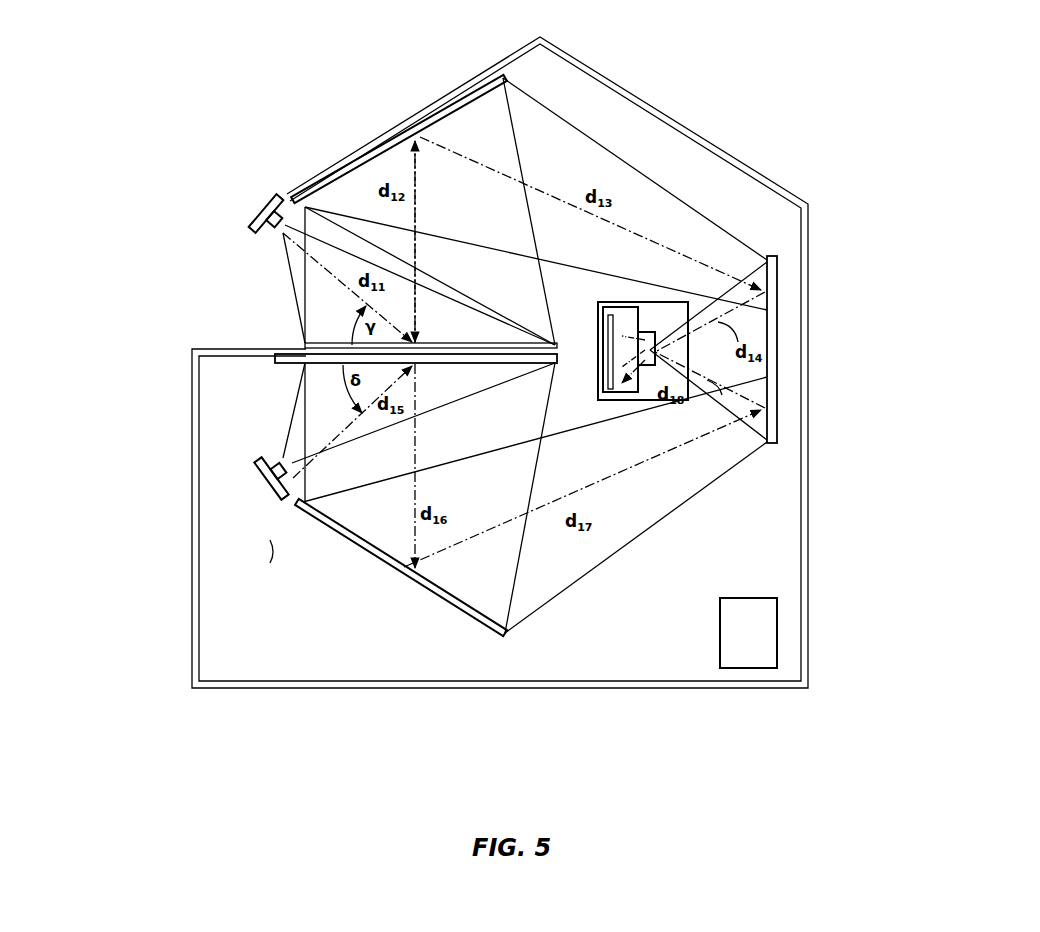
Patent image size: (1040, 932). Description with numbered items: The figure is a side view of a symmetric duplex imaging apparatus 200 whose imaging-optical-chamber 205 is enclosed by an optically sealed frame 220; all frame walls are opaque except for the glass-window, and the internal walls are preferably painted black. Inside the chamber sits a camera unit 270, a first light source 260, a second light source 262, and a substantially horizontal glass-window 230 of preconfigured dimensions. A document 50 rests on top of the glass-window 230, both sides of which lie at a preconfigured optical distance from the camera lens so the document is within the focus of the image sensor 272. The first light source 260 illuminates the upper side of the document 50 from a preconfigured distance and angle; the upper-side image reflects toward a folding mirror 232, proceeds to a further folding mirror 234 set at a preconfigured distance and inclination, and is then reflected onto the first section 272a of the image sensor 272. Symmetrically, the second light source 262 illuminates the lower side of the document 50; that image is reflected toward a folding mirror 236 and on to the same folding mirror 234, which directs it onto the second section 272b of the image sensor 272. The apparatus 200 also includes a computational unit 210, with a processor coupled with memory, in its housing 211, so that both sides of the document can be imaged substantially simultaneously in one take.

The duplex imaging apparatus 200 is at (258, 88).
The optically sealed frame 220 is at (706, 140).
The imaging-optical-chamber 205 is at (265, 556).
The first light source 260 is at (256, 207).
The second light source 262 is at (266, 470).
The folding mirror 232 is at (452, 122).
The glass-window 230 is at (288, 362).
The document 50 is at (352, 344).
The folding mirror 236 is at (438, 587).
The folding mirror 234 is at (780, 355).
The camera unit 270 is at (620, 406).
The image sensor 272 is at (656, 366).
The first section of image sensor 272a is at (601, 372).
The second section of image sensor 272b is at (601, 330).
The housing 211 is at (745, 598).
The computational unit 210 is at (779, 637).